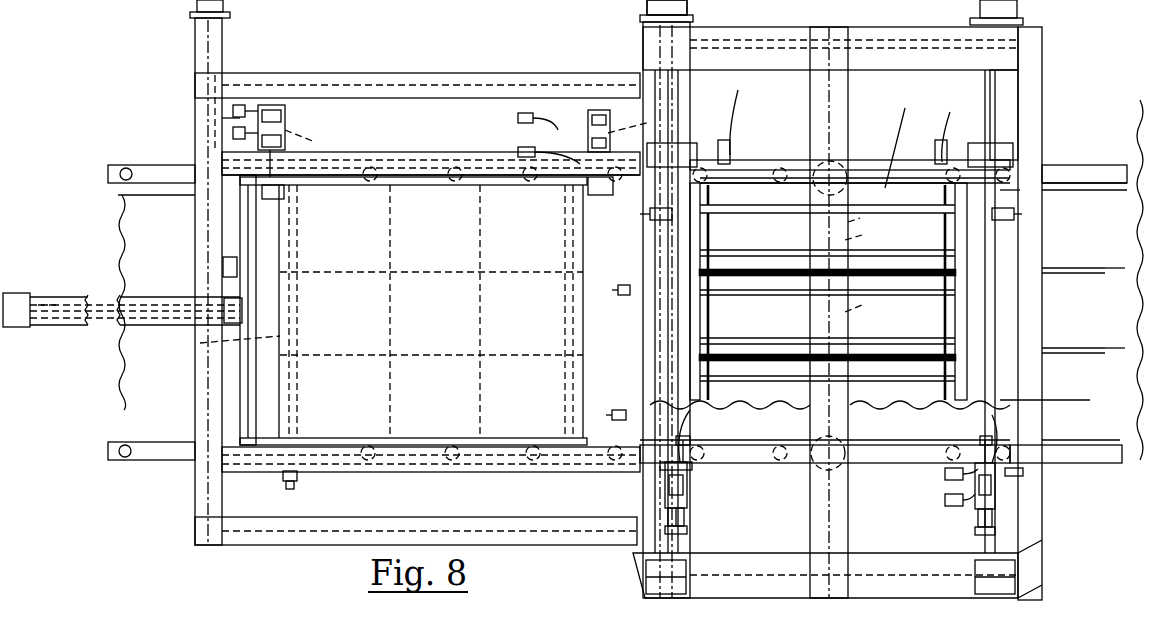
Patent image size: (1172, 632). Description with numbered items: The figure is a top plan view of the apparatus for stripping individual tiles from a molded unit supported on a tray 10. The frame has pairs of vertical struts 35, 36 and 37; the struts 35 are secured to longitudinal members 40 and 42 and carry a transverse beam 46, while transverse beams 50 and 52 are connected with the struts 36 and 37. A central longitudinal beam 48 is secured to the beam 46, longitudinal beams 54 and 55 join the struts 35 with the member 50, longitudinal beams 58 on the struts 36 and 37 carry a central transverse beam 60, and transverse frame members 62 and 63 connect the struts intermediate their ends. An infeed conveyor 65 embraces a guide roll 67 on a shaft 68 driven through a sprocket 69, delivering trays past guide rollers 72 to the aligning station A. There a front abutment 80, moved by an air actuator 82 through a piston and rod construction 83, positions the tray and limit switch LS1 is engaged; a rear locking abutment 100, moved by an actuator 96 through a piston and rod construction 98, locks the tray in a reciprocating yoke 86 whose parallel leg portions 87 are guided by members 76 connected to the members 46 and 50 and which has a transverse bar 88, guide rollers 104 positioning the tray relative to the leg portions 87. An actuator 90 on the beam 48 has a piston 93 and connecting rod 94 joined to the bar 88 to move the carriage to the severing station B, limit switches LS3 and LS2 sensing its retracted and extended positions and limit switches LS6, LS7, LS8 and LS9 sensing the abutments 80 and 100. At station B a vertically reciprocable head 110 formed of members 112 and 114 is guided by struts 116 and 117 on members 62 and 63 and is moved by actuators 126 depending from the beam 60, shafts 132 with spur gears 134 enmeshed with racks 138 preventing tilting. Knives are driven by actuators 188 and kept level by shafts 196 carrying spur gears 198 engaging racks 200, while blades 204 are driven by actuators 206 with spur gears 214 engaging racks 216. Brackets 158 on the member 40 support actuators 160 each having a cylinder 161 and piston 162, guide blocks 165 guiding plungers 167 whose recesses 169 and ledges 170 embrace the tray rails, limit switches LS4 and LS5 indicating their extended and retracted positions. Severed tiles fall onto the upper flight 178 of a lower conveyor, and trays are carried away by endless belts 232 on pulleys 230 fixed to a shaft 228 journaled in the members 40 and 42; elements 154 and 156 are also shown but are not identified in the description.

The tray 10 is at (438, 178).
The vertical struts 35 is at (240, 76).
The vertical struts 36 is at (650, 52).
The vertical struts 37 is at (1035, 42).
The longitudinally extending member 40 is at (130, 460).
The longitudinally extending member 42 is at (146, 165).
The transverse beam 46 is at (195, 125).
The longitudinally extending beam 48 is at (158, 296).
The transverse beam 50 is at (624, 36).
The transverse beam 52 is at (1030, 60).
The longitudinally extending beam 54 is at (265, 545).
The longitudinally extending beam 55 is at (436, 72).
The longitudinally extending beams 58 is at (908, 26).
The central beam 60 is at (850, 88).
The transverse frame members 62 is at (680, 90).
The transverse frame members 63 is at (970, 96).
The infeed conveyor 65 is at (114, 197).
The guide roll 67 is at (219, 341).
The shaft 68 is at (283, 477).
The driven sprocket 69 is at (288, 489).
The rollers 72 is at (122, 167).
The guide members 76 is at (494, 150).
The front movable abutment 80 is at (590, 194).
The fluid operated actuator 82 is at (612, 118).
The piston and rod construction 83 is at (642, 122).
The tray engaging yoke 86 is at (237, 213).
The leg portions 87 is at (477, 166).
The transverse bar 88 is at (240, 360).
The fluid-operated actuator 90 is at (76, 296).
The piston 93 is at (50, 295).
The connecting rod 94 is at (230, 307).
The fluid-operated actuator 96 is at (286, 123).
The piston and rod construction 98 is at (312, 141).
The rear abutment 100 is at (275, 194).
The guide rollers 104 is at (366, 178).
The reciprocable head 110 is at (664, 366).
The head members 112 is at (680, 318).
The head members 114 is at (780, 163).
The strut 116 is at (680, 143).
The strut 117 is at (986, 143).
The actuators 126 is at (841, 162).
The shafts 132 is at (672, 348).
The spur gears 134 is at (730, 122).
The rack members 138 is at (1053, 244).
The lower rail 154 is at (768, 410).
The chain 156 is at (800, 175).
The brackets 158 is at (687, 478).
The fluid operated actuators 160 is at (686, 520).
The cylinder 161 is at (688, 512).
The piston 162 is at (688, 532).
The guide block 165 is at (690, 468).
The plunger 167 is at (843, 431).
The recess 169 is at (700, 436).
The ledge 170 is at (980, 444).
The upper flight 178 is at (1145, 180).
The fluid operated actuator 188 is at (870, 275).
The shafts 196 is at (772, 275).
The spur gears 198 is at (712, 276).
The rack member 200 is at (720, 270).
The severing blade 204 is at (896, 139).
The fluid operated actuators 206 is at (868, 223).
The spur gear 214 is at (932, 212).
The rack member 216 is at (714, 205).
The shaft 228 is at (1054, 396).
The pulleys 230 is at (1025, 193).
The endless belts 232 is at (1093, 206).
The aligning station A is at (436, 178).
The severing station B is at (938, 100).
The limit switch LS1 is at (607, 409).
The limit switch LS2 is at (610, 294).
The limit switch LS3 is at (226, 258).
The limit switch LS4 is at (945, 474).
The limit switch LS5 is at (945, 498).
The limit switch LS6 is at (540, 133).
The limit switch LS7 is at (529, 117).
The limit switch LS8 is at (233, 133).
The limit switch LS9 is at (233, 111).